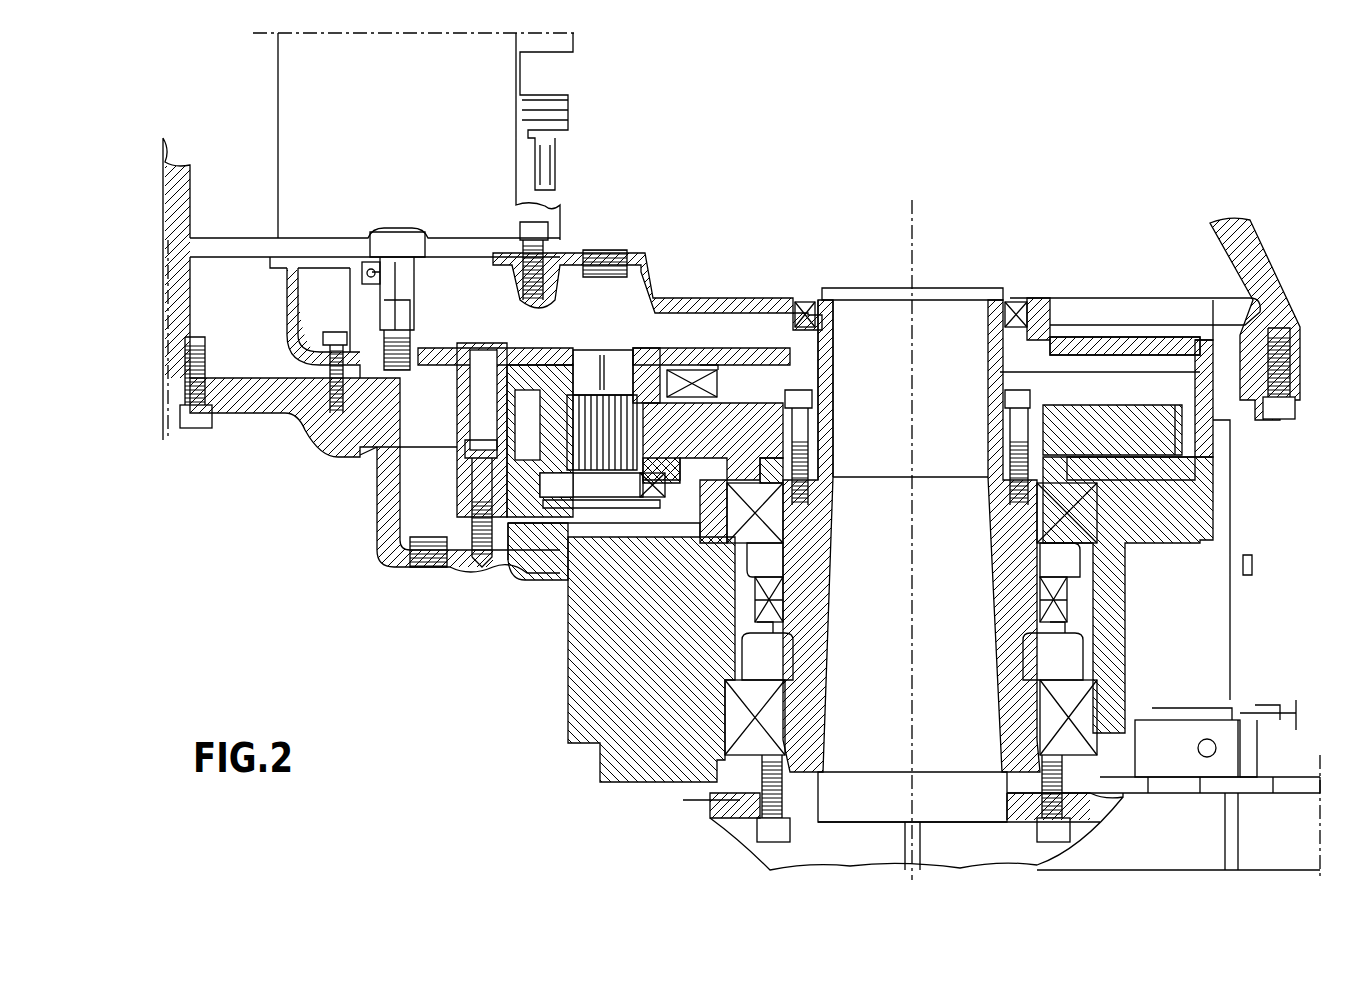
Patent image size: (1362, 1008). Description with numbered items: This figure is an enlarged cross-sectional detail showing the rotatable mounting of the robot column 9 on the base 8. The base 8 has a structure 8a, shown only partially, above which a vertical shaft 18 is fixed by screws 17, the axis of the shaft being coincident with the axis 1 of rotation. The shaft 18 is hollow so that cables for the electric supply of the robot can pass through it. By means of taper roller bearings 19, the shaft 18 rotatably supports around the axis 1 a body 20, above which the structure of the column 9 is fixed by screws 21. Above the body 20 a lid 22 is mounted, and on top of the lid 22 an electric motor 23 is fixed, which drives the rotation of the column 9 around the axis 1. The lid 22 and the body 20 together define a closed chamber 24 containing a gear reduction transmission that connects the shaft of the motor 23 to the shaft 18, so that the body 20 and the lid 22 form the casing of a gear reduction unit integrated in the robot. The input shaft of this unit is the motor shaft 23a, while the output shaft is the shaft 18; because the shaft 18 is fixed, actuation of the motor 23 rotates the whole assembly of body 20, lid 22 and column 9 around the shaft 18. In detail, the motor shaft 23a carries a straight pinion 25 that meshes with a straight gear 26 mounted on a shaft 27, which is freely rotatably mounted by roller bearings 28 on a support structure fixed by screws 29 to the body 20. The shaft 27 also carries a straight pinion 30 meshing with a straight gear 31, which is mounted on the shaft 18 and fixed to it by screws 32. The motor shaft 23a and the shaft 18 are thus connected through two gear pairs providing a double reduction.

The axis 1 is at (918, 325).
The base 8 is at (1305, 768).
The structure 8a is at (1175, 830).
The column 9 is at (1263, 262).
The screws 17 is at (765, 828).
The vertical shaft 18 is at (832, 315).
The taper roller bearings 19 is at (738, 720).
The body 20 is at (572, 718).
The screws 21 is at (190, 432).
The lid 22 is at (735, 305).
The electric motor 23 is at (290, 118).
The shaft of the electric motor 23a is at (398, 287).
The closed chamber 24 is at (1087, 363).
The straight pinion 25 is at (398, 443).
The gear 26 is at (665, 342).
The shaft 27 is at (598, 365).
The roller bearings 28 is at (685, 372).
The screws 29 is at (480, 478).
The straight pinion 30 is at (562, 427).
The gear 31 is at (1143, 432).
The screws 32 is at (1015, 417).